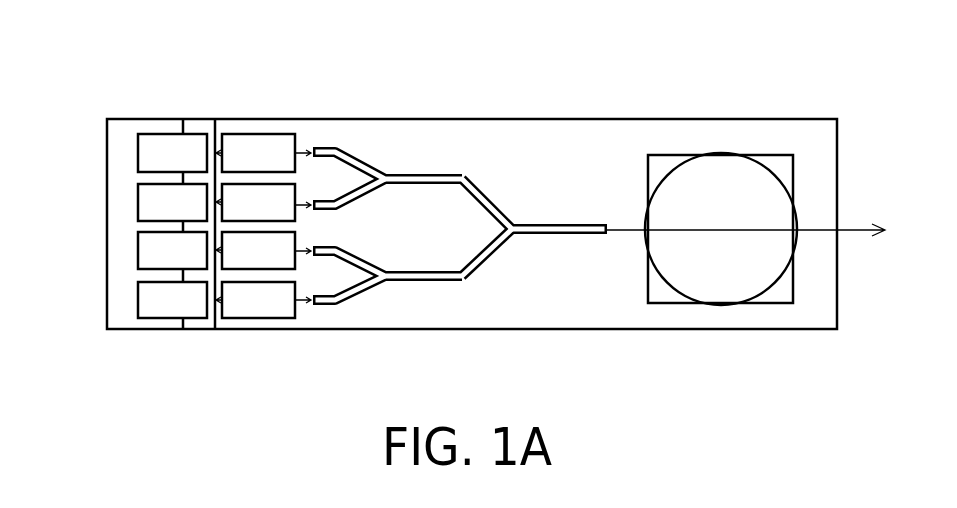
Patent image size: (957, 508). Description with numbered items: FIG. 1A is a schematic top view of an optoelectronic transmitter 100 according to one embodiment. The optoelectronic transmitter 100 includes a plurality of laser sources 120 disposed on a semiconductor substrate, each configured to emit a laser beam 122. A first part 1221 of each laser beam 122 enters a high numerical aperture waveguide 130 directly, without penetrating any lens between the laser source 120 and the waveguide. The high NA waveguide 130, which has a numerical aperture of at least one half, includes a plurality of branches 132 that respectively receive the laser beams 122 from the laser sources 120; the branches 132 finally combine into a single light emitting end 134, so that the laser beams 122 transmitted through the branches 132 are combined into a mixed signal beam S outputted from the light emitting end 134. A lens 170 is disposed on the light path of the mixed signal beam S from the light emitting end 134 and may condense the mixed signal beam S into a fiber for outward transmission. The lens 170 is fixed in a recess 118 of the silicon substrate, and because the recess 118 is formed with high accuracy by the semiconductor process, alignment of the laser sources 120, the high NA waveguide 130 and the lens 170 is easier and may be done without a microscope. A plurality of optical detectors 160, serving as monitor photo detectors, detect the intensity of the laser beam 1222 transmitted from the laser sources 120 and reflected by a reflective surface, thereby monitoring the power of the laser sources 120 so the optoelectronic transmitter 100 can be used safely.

The optoelectronic transmitter 100 is at (844, 379).
The recess 118 is at (663, 161).
The laser source 120 is at (245, 147).
The laser beam 122 is at (230, 167).
The first part of the laser beam 1221 is at (305, 150).
The laser beam 1222 is at (215, 128).
The high numerical aperture waveguide 130 is at (460, 219).
The branches 132 is at (387, 177).
The light emitting end 134 is at (534, 165).
The optical detector 160 is at (148, 153).
The lens 170 is at (727, 175).
The mixed signal beam S is at (627, 230).